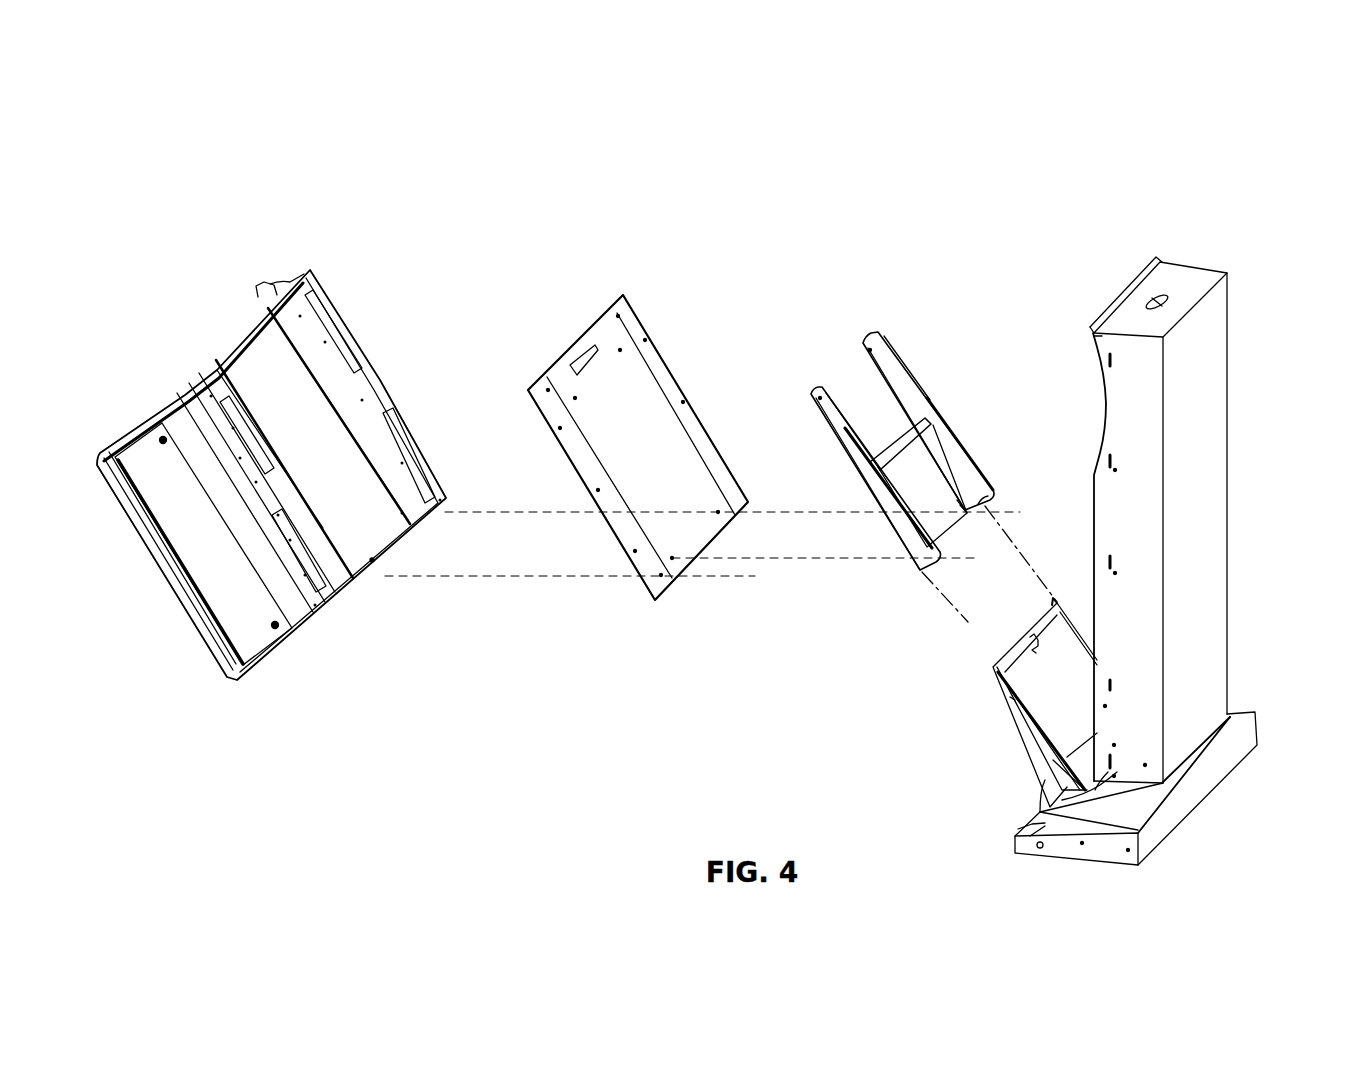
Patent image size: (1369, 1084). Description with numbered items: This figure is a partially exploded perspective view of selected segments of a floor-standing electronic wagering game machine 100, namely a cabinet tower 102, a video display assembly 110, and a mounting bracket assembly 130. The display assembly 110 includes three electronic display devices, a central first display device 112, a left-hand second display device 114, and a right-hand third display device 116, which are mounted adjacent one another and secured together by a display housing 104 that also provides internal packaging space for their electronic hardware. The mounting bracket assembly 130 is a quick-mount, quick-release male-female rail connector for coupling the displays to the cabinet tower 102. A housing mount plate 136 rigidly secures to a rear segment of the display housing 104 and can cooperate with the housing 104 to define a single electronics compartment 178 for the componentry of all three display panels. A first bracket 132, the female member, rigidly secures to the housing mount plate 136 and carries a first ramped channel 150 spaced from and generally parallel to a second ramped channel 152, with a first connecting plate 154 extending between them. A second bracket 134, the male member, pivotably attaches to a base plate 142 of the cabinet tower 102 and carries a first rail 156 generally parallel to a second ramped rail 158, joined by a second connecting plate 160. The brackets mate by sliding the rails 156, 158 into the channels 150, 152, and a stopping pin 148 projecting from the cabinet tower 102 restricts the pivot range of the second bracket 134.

The electronic wagering game machine 100 is at (1239, 198).
The cabinet tower 102 is at (1222, 392).
The display housing 104 is at (291, 272).
The video display assembly 110 is at (322, 252).
The first display device 112 is at (214, 348).
The second display device 114 is at (262, 276).
The third display device 116 is at (107, 422).
The mounting bracket assembly 130 is at (733, 698).
The first bracket 132 is at (952, 396).
The second bracket 134 is at (1020, 748).
The housing mount plate 136 is at (638, 276).
The base plate 142 is at (1228, 748).
The stopping pin 148 is at (1060, 790).
The first ramped channel 150 is at (863, 335).
The second ramped channel 152 is at (817, 386).
The first connecting plate 154 is at (945, 500).
The first rail 156 is at (1055, 605).
The second ramped rail 158 is at (1010, 703).
The second connecting plate 160 is at (1013, 657).
The electronics compartment 178 is at (375, 572).